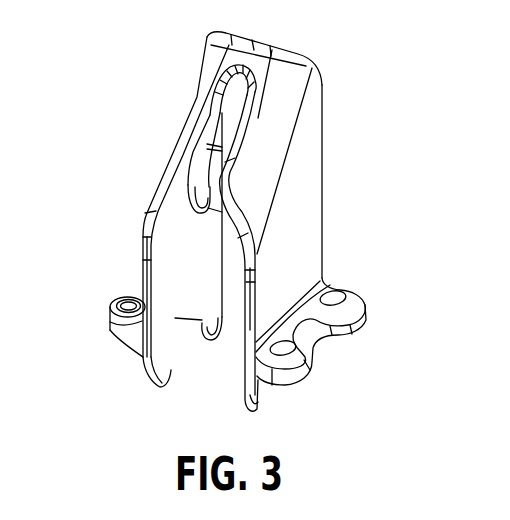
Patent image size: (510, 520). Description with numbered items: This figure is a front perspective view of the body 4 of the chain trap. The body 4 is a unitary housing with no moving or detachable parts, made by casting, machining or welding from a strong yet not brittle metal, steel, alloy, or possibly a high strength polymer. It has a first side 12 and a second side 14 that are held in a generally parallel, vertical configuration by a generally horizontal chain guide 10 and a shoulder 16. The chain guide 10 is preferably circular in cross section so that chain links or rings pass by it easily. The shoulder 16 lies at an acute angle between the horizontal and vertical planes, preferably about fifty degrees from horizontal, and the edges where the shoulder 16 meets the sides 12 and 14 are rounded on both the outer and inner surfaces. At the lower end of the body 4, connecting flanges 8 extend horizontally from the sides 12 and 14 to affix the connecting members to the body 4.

The chain trap body 4 is at (316, 32).
The shoulder 16 is at (313, 67).
The first side 12 is at (313, 160).
The chain guide 10 is at (205, 193).
The connecting flanges 8 is at (357, 298).
The second side 14 is at (207, 318).